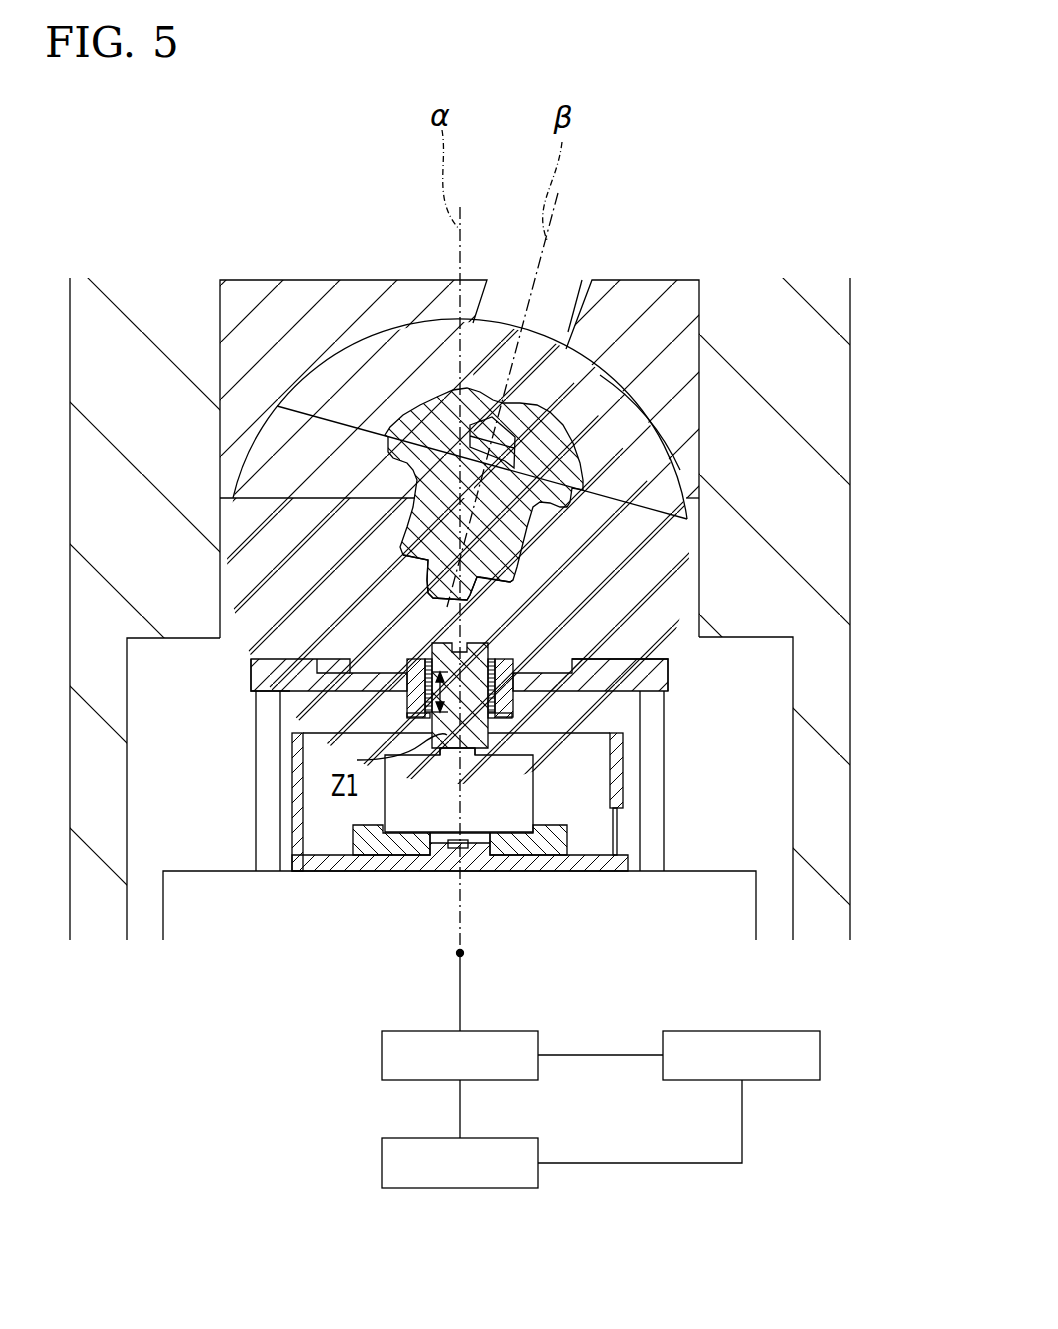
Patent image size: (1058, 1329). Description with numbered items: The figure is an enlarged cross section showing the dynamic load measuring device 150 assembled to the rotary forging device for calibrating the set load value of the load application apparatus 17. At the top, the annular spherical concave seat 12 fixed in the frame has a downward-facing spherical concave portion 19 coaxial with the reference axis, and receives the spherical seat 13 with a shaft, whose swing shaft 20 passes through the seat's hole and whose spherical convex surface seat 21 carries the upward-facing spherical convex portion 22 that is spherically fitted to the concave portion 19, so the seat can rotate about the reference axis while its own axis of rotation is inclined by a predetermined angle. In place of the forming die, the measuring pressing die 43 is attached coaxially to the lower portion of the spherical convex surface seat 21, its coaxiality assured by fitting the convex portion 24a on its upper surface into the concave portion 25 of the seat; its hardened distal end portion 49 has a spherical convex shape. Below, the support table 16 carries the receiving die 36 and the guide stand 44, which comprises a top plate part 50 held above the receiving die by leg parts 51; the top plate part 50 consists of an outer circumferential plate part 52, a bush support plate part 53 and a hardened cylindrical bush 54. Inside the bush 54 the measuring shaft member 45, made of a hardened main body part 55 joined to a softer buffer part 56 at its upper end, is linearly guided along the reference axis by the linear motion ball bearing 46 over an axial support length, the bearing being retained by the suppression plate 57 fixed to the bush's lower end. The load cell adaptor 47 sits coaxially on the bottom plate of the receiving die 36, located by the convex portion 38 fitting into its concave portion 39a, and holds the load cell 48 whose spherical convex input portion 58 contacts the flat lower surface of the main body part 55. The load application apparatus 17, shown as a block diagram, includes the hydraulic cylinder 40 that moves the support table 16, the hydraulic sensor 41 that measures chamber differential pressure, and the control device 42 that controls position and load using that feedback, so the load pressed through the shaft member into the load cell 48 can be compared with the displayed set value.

The spherical concave seat 12 is at (250, 307).
The spherical seat with a shaft 13 is at (562, 320).
The support table 16 is at (200, 912).
The load application apparatus 17 is at (370, 1098).
The spherical concave portion 19 is at (642, 410).
The swing shaft 20 is at (575, 305).
The spherical convex surface seat 21 is at (380, 330).
The spherical convex portion 22 is at (660, 437).
The convex portion 24a is at (455, 448).
The concave portion 25 is at (510, 437).
The receiving die 36 is at (290, 810).
The convex portion 38 is at (485, 845).
The concave portion 39a is at (445, 847).
The hydraulic cylinder 40 is at (382, 1048).
The hydraulic sensor 41 is at (382, 1173).
The control device 42 is at (783, 1080).
The measuring pressing die 43 is at (490, 528).
The guide stand 44 is at (643, 675).
The measuring shaft member 45 is at (502, 720).
The linear motion ball bearing 46 is at (505, 672).
The load cell adaptor 47 is at (540, 842).
The load cell 48 is at (410, 803).
The distal end portion 49 is at (427, 593).
The top plate part 50 is at (620, 668).
The leg parts 51 is at (273, 775).
The outer circumferential plate part 52 is at (275, 678).
The bush support plate part 53 is at (345, 668).
The bush 54 is at (413, 663).
The main body part 55 is at (512, 702).
The buffer part 56 is at (478, 640).
The suppression plate 57 is at (415, 722).
The input portion 58 is at (470, 740).
The dynamic load measuring device 150 is at (755, 738).